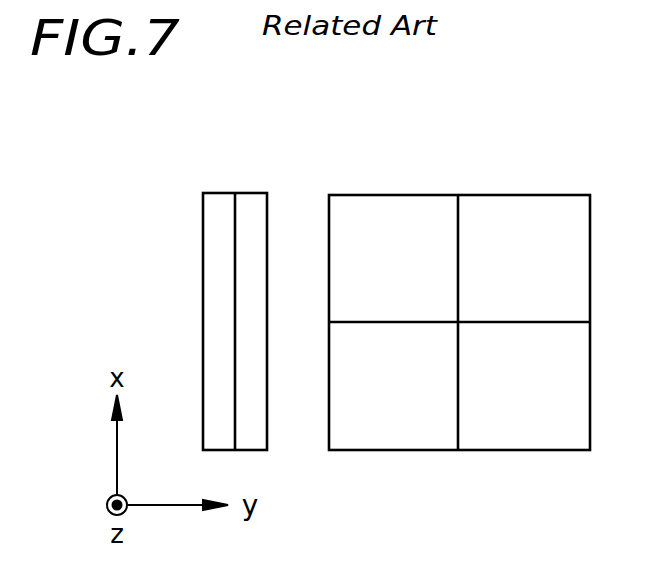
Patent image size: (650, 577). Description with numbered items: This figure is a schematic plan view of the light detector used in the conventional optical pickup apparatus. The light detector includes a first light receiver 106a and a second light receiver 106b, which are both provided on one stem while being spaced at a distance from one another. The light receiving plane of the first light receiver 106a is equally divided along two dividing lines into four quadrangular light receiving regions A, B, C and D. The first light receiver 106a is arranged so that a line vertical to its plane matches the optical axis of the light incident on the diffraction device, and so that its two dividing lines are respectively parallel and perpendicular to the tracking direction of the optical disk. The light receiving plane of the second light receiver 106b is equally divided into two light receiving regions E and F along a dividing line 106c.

The first light receiver 106a is at (420, 194).
The second light receiver 106b is at (225, 193).
The dividing line 106c is at (235, 415).